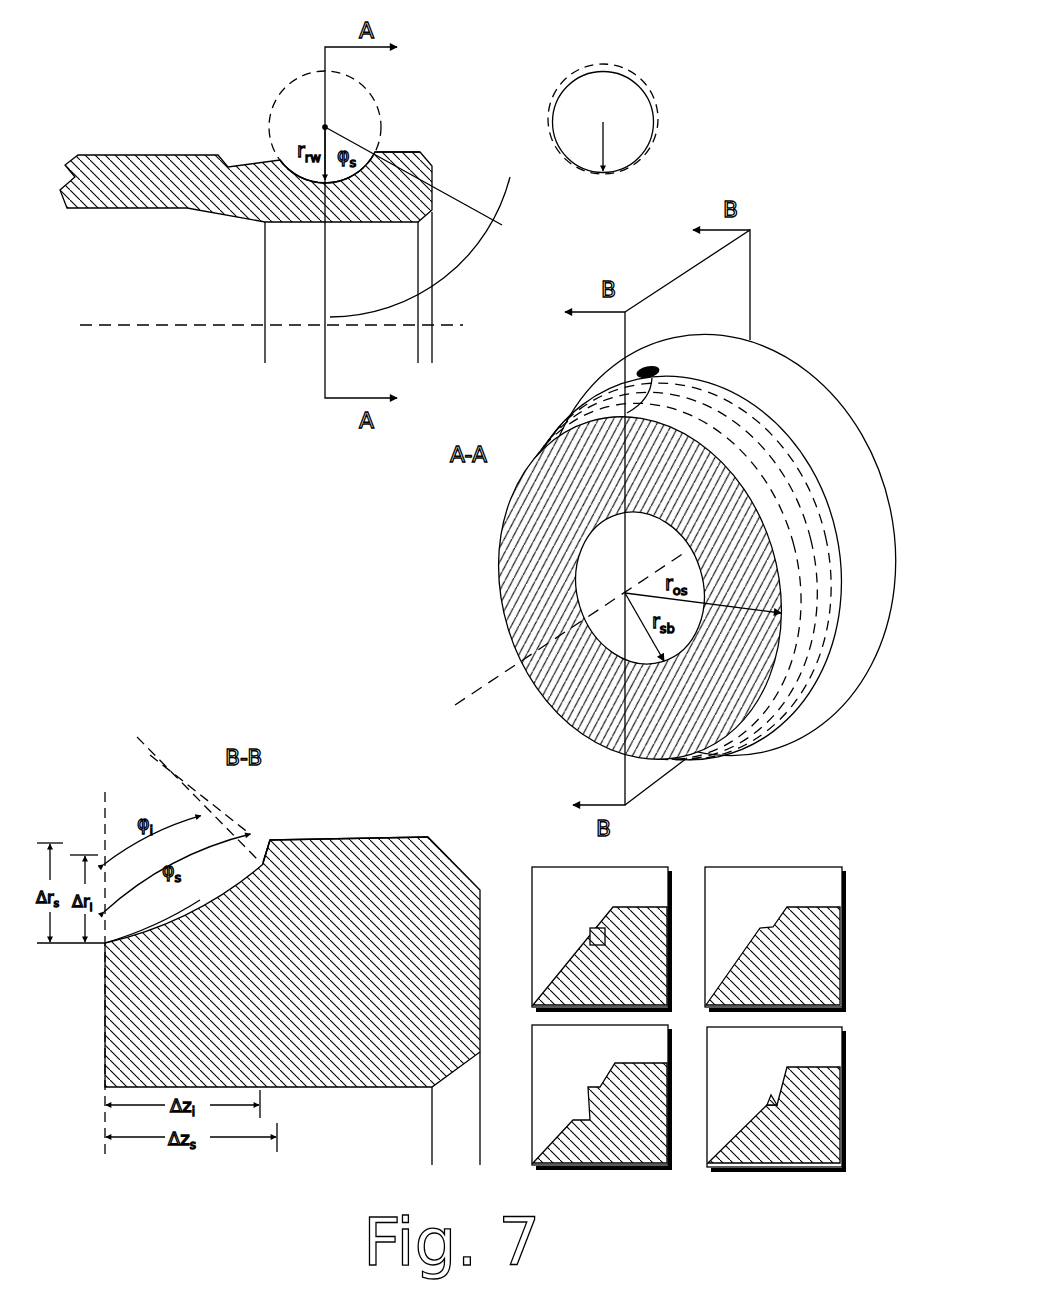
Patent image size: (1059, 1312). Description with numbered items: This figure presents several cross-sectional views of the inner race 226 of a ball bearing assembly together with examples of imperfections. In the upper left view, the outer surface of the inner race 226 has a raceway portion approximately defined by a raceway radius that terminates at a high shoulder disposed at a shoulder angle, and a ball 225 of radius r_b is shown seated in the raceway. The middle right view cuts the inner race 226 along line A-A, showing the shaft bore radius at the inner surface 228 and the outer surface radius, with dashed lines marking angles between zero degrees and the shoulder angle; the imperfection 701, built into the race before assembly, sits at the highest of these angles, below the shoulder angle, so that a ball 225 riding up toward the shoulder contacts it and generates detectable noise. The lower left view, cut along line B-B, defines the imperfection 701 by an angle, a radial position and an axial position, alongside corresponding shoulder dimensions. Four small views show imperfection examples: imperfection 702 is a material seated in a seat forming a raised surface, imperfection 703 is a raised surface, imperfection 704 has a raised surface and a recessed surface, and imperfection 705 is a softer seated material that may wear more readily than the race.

The ball 225 is at (633, 80).
The inner race 226 is at (163, 190).
The inner surface 228 is at (398, 368).
The imperfection 701 is at (655, 366).
The imperfection 702 is at (592, 928).
The imperfection 703 is at (762, 928).
The imperfection 704 is at (588, 1087).
The imperfection 705 is at (773, 1098).